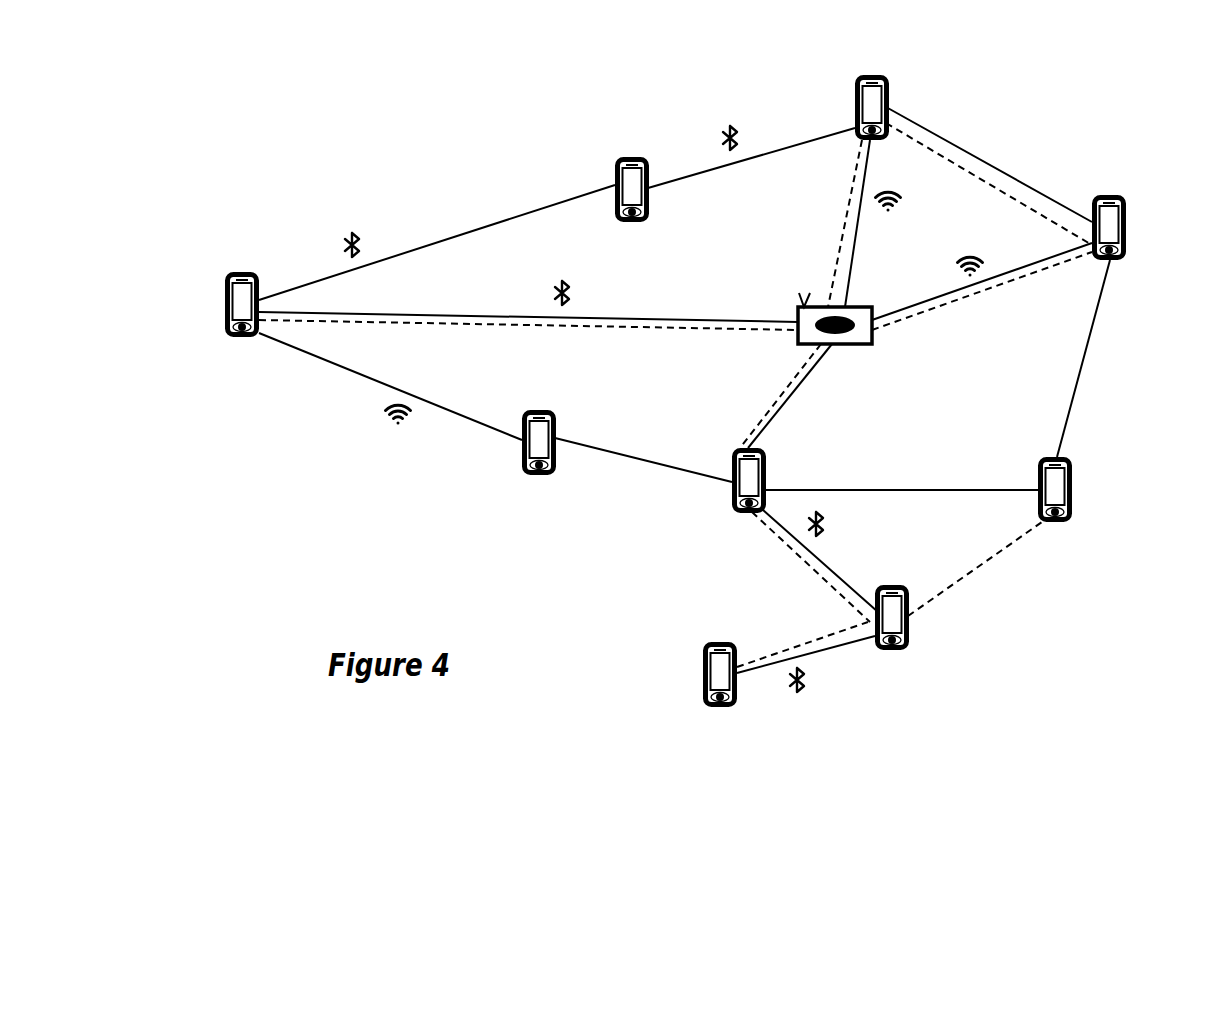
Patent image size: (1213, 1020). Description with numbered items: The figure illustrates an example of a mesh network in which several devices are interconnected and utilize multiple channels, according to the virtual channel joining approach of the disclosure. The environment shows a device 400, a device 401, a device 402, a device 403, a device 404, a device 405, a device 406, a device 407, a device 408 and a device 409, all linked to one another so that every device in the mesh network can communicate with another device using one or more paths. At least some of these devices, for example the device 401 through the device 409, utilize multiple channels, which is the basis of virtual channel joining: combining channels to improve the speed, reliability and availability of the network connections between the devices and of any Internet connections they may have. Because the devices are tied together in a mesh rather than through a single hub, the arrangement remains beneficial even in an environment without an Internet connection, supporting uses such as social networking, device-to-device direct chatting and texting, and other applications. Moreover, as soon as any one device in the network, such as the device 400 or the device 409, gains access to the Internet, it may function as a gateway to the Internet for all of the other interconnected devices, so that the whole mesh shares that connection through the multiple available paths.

The device 400 is at (714, 642).
The device 401 is at (540, 410).
The device 402 is at (238, 272).
The device 403 is at (744, 448).
The device 404 is at (892, 585).
The device 405 is at (1108, 195).
The device 406 is at (864, 75).
The device 407 is at (1050, 457).
The device 408 is at (626, 157).
The device 409 is at (824, 307).